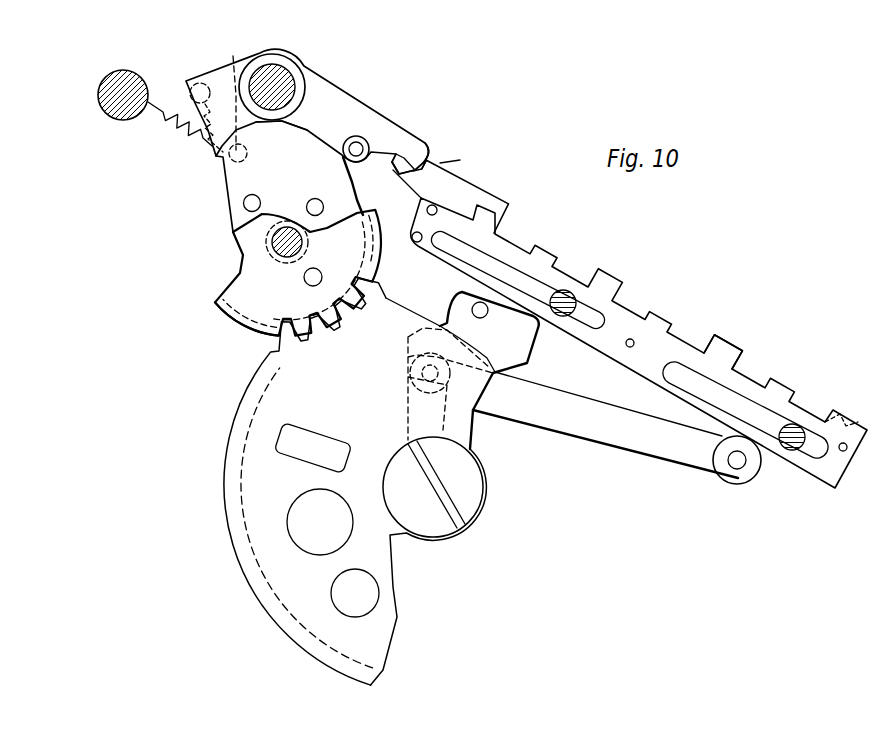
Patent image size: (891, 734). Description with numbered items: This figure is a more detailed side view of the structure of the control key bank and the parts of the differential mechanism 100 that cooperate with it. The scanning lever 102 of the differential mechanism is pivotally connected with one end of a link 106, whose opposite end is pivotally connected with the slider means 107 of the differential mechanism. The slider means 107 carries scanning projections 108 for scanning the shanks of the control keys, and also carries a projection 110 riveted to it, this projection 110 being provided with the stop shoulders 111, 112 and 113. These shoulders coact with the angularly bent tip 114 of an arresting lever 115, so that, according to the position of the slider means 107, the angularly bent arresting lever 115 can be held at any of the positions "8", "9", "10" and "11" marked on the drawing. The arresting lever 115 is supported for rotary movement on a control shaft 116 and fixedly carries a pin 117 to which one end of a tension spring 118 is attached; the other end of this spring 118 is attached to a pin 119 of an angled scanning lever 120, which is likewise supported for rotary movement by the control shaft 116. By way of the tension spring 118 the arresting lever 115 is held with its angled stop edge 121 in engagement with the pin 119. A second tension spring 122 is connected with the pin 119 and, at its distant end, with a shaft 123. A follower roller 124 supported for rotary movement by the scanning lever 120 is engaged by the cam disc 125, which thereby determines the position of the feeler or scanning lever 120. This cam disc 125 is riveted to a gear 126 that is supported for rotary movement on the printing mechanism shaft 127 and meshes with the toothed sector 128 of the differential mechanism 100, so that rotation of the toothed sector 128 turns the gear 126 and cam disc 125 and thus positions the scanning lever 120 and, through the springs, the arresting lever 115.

The differential mechanism 100 is at (473, 498).
The scanning lever 102 is at (521, 364).
The link 106 is at (636, 442).
The slider means 107 is at (687, 343).
The scanning projections 108 is at (723, 348).
The projection 110 is at (490, 196).
The stop shoulder 111 is at (430, 160).
The stop shoulder 112 is at (421, 156).
The stop shoulder 113 is at (393, 166).
The angularly bent tip 114 is at (404, 160).
The arresting lever 115 is at (316, 70).
The control shaft 116 is at (272, 104).
The pin 117 is at (189, 88).
The tension spring 118 is at (213, 83).
The pin 119 is at (226, 161).
The angled scanning lever 120 is at (323, 90).
The angled stop edge 121 is at (242, 88).
The second tension spring 122 is at (170, 133).
The shaft 123 is at (121, 120).
The follower roller 124 is at (358, 136).
The cam disc 125 is at (267, 212).
The gear 126 is at (240, 297).
The printing mechanism shaft 127 is at (272, 252).
The toothed sector 128 is at (247, 473).
The position "8" 8 is at (393, 170).
The position "9" 9 is at (415, 217).
The position "10" 10 is at (440, 163).
The position "11" 11 is at (411, 246).